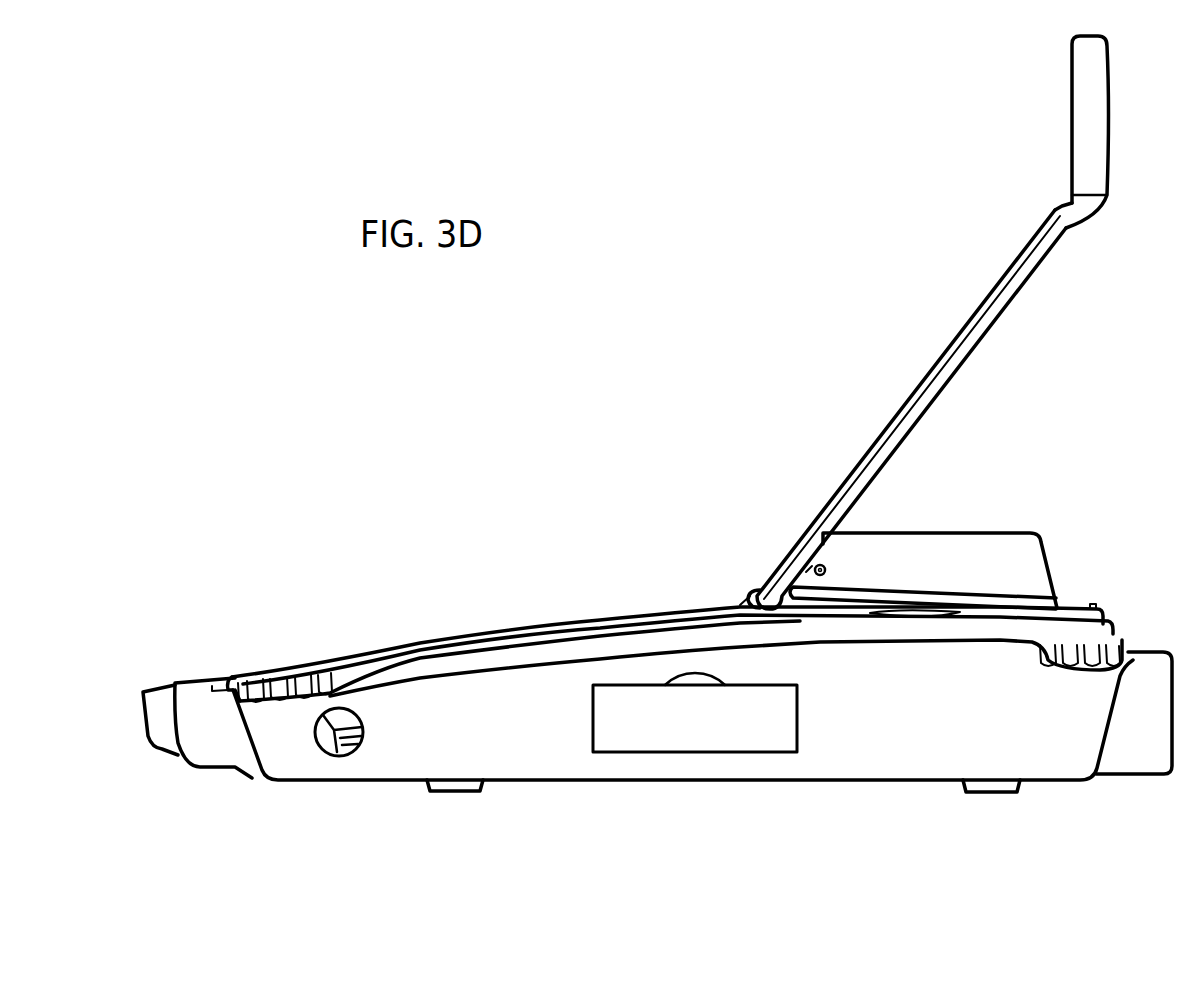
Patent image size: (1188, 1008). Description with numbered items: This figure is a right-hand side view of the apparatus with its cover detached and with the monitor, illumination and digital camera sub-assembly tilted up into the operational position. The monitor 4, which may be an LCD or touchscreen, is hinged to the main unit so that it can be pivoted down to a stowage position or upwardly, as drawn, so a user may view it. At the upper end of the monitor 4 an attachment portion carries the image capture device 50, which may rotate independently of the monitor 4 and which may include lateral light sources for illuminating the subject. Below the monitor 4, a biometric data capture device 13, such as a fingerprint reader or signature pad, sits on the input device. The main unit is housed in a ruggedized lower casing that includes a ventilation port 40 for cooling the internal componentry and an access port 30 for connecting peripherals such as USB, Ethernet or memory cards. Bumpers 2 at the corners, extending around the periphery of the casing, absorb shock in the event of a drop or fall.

The bumpers 2 is at (249, 682).
The monitor 4 is at (915, 383).
The biometric data capture device 13 is at (1024, 546).
The access port 30 is at (797, 720).
The ventilation port 40 is at (360, 743).
The image capture device 50 is at (1112, 108).